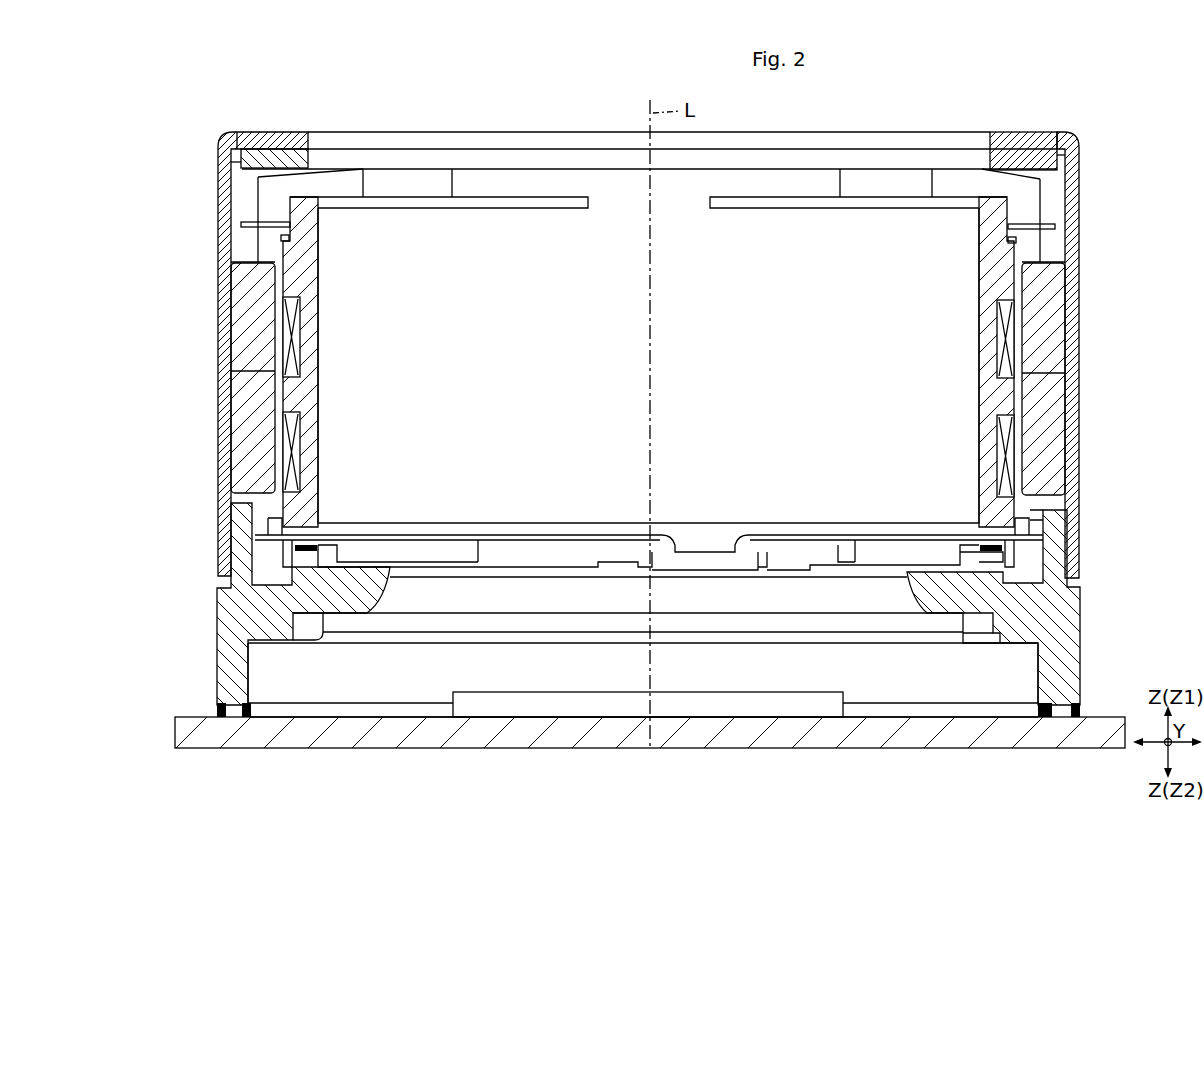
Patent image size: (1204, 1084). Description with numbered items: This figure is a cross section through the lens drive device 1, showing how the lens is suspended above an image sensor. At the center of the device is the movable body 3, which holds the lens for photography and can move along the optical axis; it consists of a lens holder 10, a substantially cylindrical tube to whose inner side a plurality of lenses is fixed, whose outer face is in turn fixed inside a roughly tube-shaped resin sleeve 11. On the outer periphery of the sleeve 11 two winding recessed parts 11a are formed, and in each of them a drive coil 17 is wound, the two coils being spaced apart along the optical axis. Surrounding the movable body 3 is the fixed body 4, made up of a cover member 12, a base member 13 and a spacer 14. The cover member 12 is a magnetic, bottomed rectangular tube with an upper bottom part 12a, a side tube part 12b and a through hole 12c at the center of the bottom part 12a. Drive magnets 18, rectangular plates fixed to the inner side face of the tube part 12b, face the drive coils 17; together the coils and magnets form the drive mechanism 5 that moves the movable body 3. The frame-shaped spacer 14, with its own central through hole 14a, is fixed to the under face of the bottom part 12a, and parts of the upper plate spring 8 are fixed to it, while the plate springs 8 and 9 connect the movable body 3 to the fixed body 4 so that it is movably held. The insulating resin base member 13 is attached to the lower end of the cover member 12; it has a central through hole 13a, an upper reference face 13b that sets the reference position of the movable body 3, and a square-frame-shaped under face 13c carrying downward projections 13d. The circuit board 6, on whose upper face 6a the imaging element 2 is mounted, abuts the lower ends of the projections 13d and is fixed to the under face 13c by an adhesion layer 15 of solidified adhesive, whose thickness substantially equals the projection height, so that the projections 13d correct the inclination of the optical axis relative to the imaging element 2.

The lens drive device 1 is at (1124, 133).
The imaging element 2 is at (812, 690).
The movable body 3 is at (990, 197).
The fixed body 4 is at (176, 615).
The drive mechanism 5 is at (1096, 253).
The circuit board 6 is at (934, 748).
The upper face 6a is at (912, 716).
The plate spring 8 is at (1050, 224).
The plate spring 9 is at (1043, 514).
The lens holder 10 is at (850, 207).
The sleeve 11 is at (648, 348).
The winding recessed part 11a is at (292, 325).
The cover member 12 is at (218, 545).
The bottom part 12a is at (262, 131).
The tube part 12b is at (218, 222).
The through hole 12c is at (314, 140).
The base member 13 is at (217, 612).
The through hole 13a is at (388, 590).
The reference face 13b is at (319, 540).
The under face 13c is at (989, 706).
The projection 13d is at (230, 720).
The spacer 14 is at (1080, 160).
The through hole 14a is at (980, 157).
The adhesion layer 15 is at (955, 705).
The drive coil 17 is at (1015, 313).
The drive magnet 18 is at (231, 342).